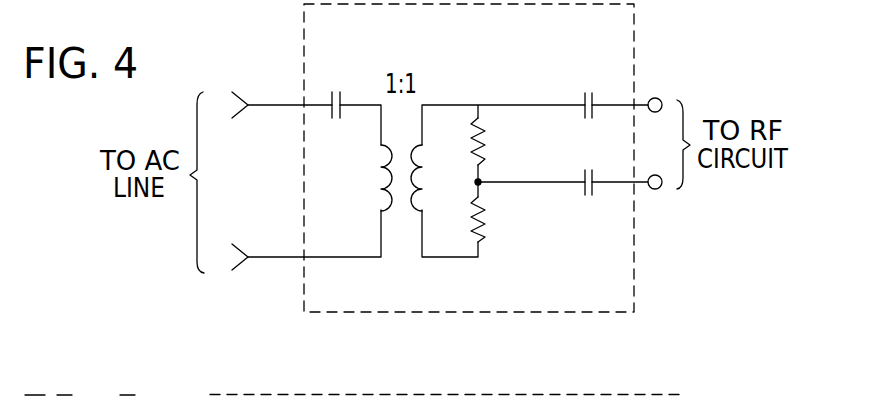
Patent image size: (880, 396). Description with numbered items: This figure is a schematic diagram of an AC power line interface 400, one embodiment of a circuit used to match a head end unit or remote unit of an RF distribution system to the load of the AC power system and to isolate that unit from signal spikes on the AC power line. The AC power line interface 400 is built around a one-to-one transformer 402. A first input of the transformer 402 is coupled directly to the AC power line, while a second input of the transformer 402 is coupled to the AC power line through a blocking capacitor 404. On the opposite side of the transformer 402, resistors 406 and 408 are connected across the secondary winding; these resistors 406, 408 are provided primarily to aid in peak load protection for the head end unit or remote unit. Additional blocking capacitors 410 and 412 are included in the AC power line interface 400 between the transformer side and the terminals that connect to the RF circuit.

The AC power line interface 400 is at (636, 30).
The one-to-one transformer 402 is at (398, 259).
The blocking capacitor 404 is at (336, 120).
The resistor 406 is at (488, 218).
The resistor 408 is at (488, 143).
The blocking capacitor 410 is at (588, 88).
The blocking capacitor 412 is at (588, 197).